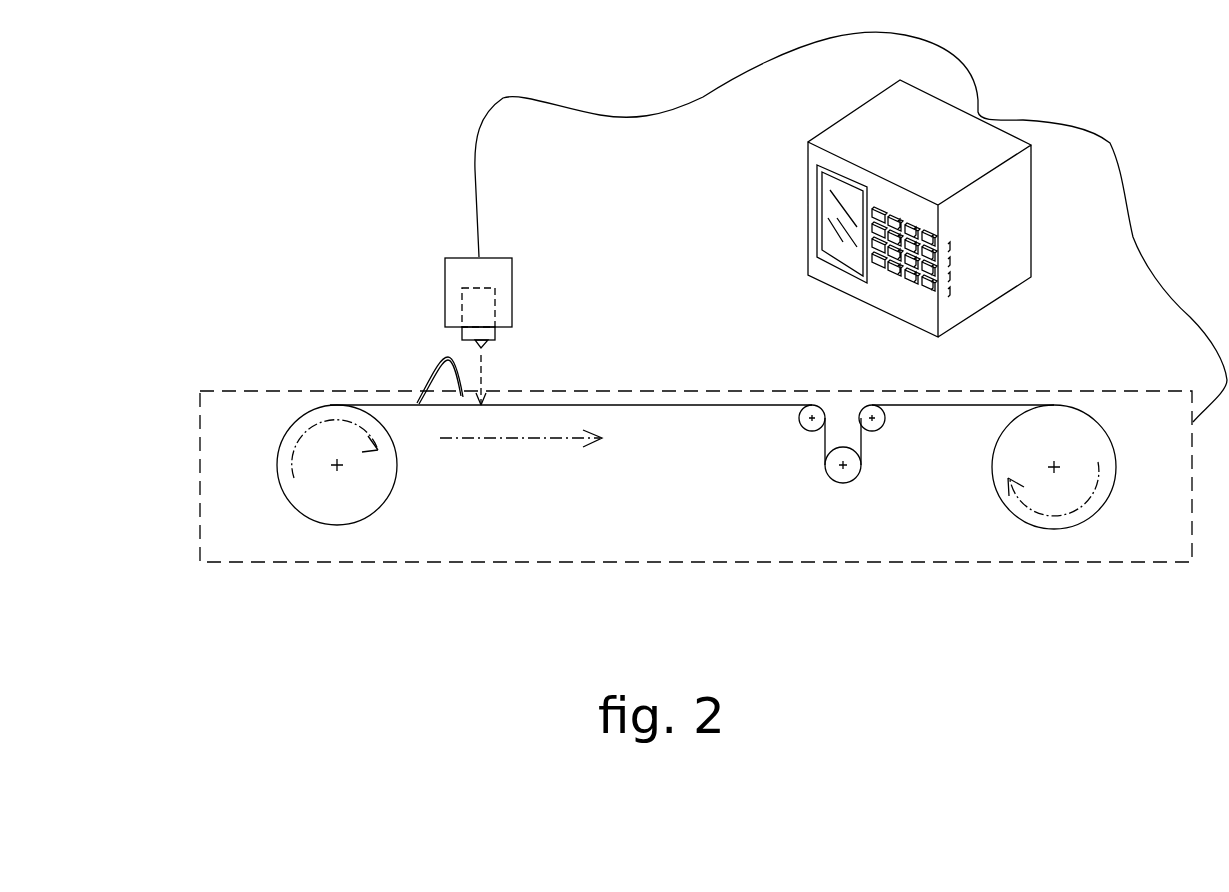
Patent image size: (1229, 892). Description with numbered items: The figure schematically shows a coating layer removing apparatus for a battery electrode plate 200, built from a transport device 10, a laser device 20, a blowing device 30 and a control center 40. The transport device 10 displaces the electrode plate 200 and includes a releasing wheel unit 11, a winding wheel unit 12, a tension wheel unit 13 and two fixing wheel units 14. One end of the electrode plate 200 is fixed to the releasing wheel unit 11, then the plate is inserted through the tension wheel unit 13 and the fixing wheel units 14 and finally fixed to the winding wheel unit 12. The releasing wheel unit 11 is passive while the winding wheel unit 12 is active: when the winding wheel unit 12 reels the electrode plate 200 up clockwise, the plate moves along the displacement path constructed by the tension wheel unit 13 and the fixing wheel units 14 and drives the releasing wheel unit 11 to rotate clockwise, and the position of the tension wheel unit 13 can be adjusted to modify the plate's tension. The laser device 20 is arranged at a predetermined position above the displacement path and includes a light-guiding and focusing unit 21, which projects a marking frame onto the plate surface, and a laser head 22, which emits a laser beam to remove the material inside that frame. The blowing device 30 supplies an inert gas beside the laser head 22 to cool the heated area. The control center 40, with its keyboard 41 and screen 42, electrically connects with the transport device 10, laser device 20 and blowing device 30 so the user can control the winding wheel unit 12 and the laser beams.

The transport device 10 is at (200, 507).
The releasing wheel unit 11 is at (317, 522).
The winding wheel unit 12 is at (1078, 517).
The tension wheel unit 13 is at (853, 480).
The fixing wheel units 14 is at (818, 405).
The laser device 20 is at (466, 314).
The light-guiding and focusing unit 21 is at (497, 278).
The laser head 22 is at (513, 337).
The blowing device 30 is at (430, 377).
The control center 40 is at (928, 208).
The keyboard 41 is at (936, 260).
The screen 42 is at (832, 248).
The electrode plate 200 is at (667, 405).